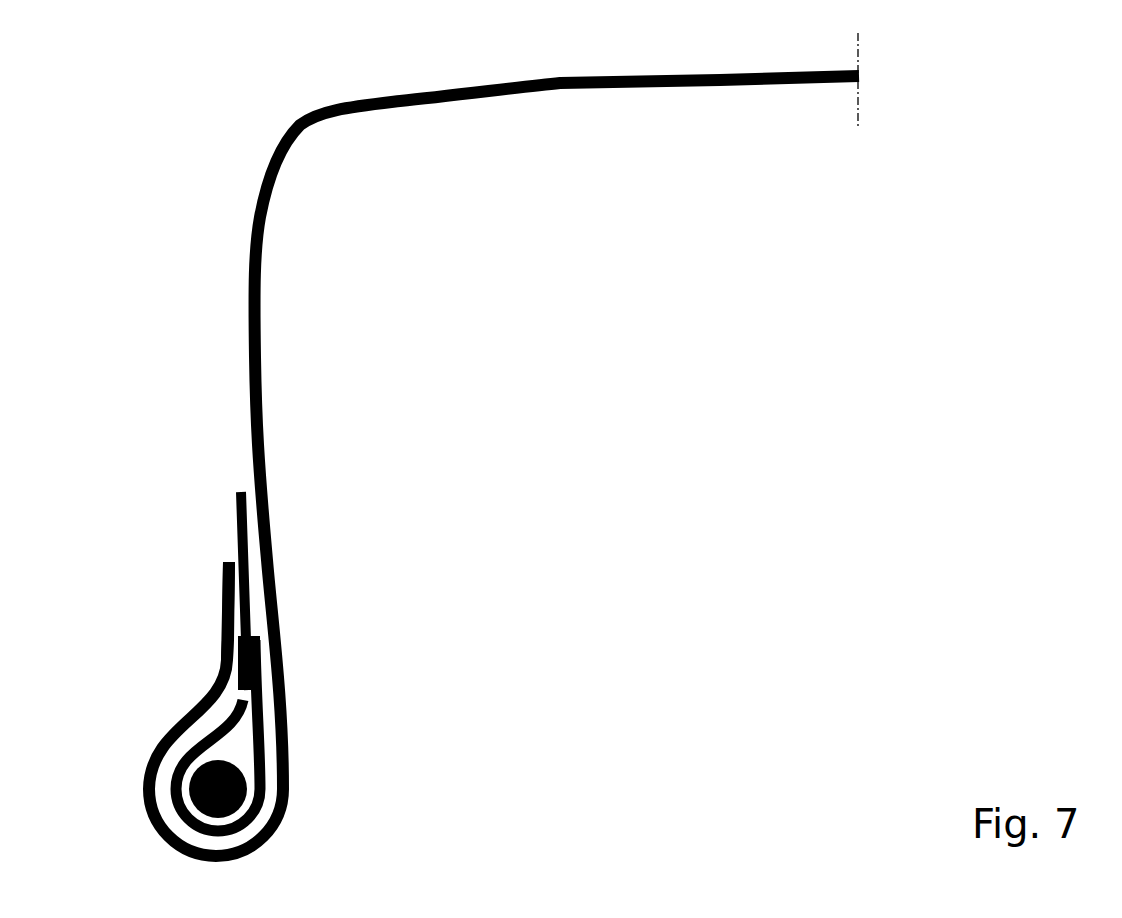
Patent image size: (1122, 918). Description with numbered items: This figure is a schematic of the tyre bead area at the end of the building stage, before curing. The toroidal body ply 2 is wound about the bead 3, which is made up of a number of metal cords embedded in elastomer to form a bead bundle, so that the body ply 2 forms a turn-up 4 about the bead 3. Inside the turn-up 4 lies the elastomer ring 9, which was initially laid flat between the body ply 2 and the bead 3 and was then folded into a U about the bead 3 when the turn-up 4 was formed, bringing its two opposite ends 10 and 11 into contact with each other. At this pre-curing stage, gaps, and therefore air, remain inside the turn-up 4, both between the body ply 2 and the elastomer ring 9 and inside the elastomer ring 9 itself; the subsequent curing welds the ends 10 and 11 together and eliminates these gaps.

The body ply 2 is at (260, 358).
The bead 3 is at (247, 788).
The turn-up 4 is at (306, 565).
The elastomer ring 9 is at (168, 812).
The end of elastomer ring 10 is at (239, 490).
The end of elastomer ring 11 is at (233, 642).